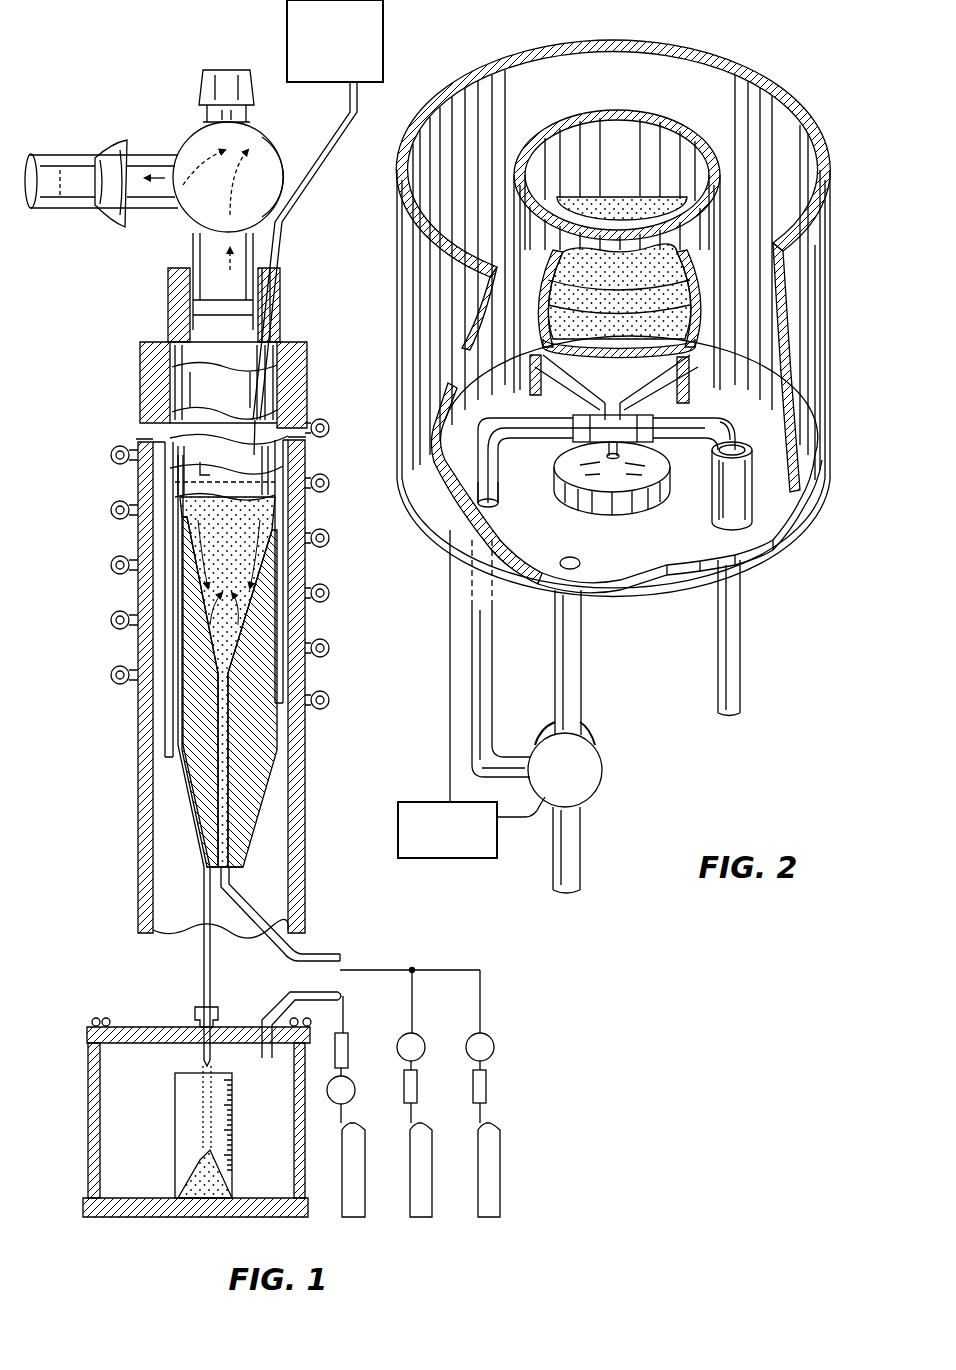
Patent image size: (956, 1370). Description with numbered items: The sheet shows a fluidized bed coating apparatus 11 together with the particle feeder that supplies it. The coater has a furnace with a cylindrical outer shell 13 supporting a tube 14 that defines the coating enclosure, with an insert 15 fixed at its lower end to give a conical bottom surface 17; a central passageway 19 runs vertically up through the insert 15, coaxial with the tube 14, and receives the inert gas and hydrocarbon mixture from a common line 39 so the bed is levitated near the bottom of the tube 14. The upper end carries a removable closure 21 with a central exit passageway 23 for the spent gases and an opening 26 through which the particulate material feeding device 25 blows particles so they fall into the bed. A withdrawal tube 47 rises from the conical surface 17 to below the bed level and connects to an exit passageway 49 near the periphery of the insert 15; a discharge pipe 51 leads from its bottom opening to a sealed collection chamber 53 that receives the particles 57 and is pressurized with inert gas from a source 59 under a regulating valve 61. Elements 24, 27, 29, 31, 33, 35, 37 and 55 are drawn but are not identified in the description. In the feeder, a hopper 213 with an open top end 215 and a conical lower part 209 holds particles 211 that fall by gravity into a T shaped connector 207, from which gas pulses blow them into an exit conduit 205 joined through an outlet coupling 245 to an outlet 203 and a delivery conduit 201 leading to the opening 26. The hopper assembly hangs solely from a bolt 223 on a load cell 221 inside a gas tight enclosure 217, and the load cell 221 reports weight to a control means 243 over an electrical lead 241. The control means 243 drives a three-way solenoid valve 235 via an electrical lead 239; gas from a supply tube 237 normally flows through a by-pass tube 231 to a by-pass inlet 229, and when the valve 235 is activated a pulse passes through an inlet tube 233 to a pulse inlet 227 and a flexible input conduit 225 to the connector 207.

In FIG. 1, the fluidized bed coating apparatus 11 is at (326, 322).
In FIG. 1, the cylindrical outer shell 13 is at (296, 516).
In FIG. 1, the tube 14 is at (300, 462).
In FIG. 1, the insert 15 is at (248, 790).
In FIG. 1, the conical bottom surface 17 is at (234, 640).
In FIG. 1, the central passageway 19 is at (220, 730).
In FIG. 1, the removable closure 21 is at (168, 272).
In FIG. 1, the central exit passageway 23 is at (223, 281).
In FIG. 1, the side arm 24 is at (68, 205).
In FIG. 1, the particulate material feeding device 25 is at (287, 32).
In FIG. 2, the particulate material feeding device 25 is at (770, 68).
In FIG. 1, the opening 26 is at (280, 268).
In FIG. 1, the heating coil 27 is at (328, 558).
In FIG. 2, the floor plate 29 is at (466, 418).
In FIG. 1, the gas cylinder 31 is at (500, 1168).
In FIG. 1, the valve 33 is at (489, 1058).
In FIG. 1, the gas cylinder 35 is at (432, 1168).
In FIG. 1, the valve 37 is at (420, 1058).
In FIG. 1, the common line 39 is at (383, 970).
In FIG. 1, the withdrawal tube 47 is at (195, 580).
In FIG. 1, the exit passageway 49 is at (180, 770).
In FIG. 1, the discharge pipe 51 is at (203, 905).
In FIG. 1, the collection chamber 53 is at (148, 1027).
In FIG. 1, the graduated cylinder 55 is at (175, 1092).
In FIG. 1, the particles 57 is at (200, 1160).
In FIG. 1, the source 59 is at (365, 1168).
In FIG. 1, the regulating valve 61 is at (348, 1055).
In FIG. 1, the delivery conduit 201 is at (305, 172).
In FIG. 2, the delivery conduit 201 is at (745, 668).
In FIG. 2, the outlet 203 is at (712, 508).
In FIG. 2, the exit conduit 205 is at (705, 420).
In FIG. 2, the T shaped connector 207 is at (627, 418).
In FIG. 2, the conical lower part 209 is at (600, 385).
In FIG. 2, the particles 211 is at (625, 205).
In FIG. 2, the hopper 213 is at (722, 192).
In FIG. 2, the top end 215 is at (690, 135).
In FIG. 2, the enclosure 217 is at (826, 248).
In FIG. 2, the load cell 221 is at (595, 510).
In FIG. 2, the bolt 223 is at (612, 462).
In FIG. 2, the flexible input conduit 225 is at (498, 466).
In FIG. 2, the pulse inlet 227 is at (497, 492).
In FIG. 2, the by-pass inlet 229 is at (578, 560).
In FIG. 2, the by-pass tube 231 is at (585, 660).
In FIG. 2, the inlet tube 233 is at (494, 660).
In FIG. 2, the three-way solenoid valve 235 is at (602, 758).
In FIG. 2, the supply tube 237 is at (585, 855).
In FIG. 2, the electrical lead 239 is at (516, 820).
In FIG. 2, the electrical lead 241 is at (446, 705).
In FIG. 2, the control means 243 is at (430, 802).
In FIG. 2, the outlet coupling 245 is at (738, 452).